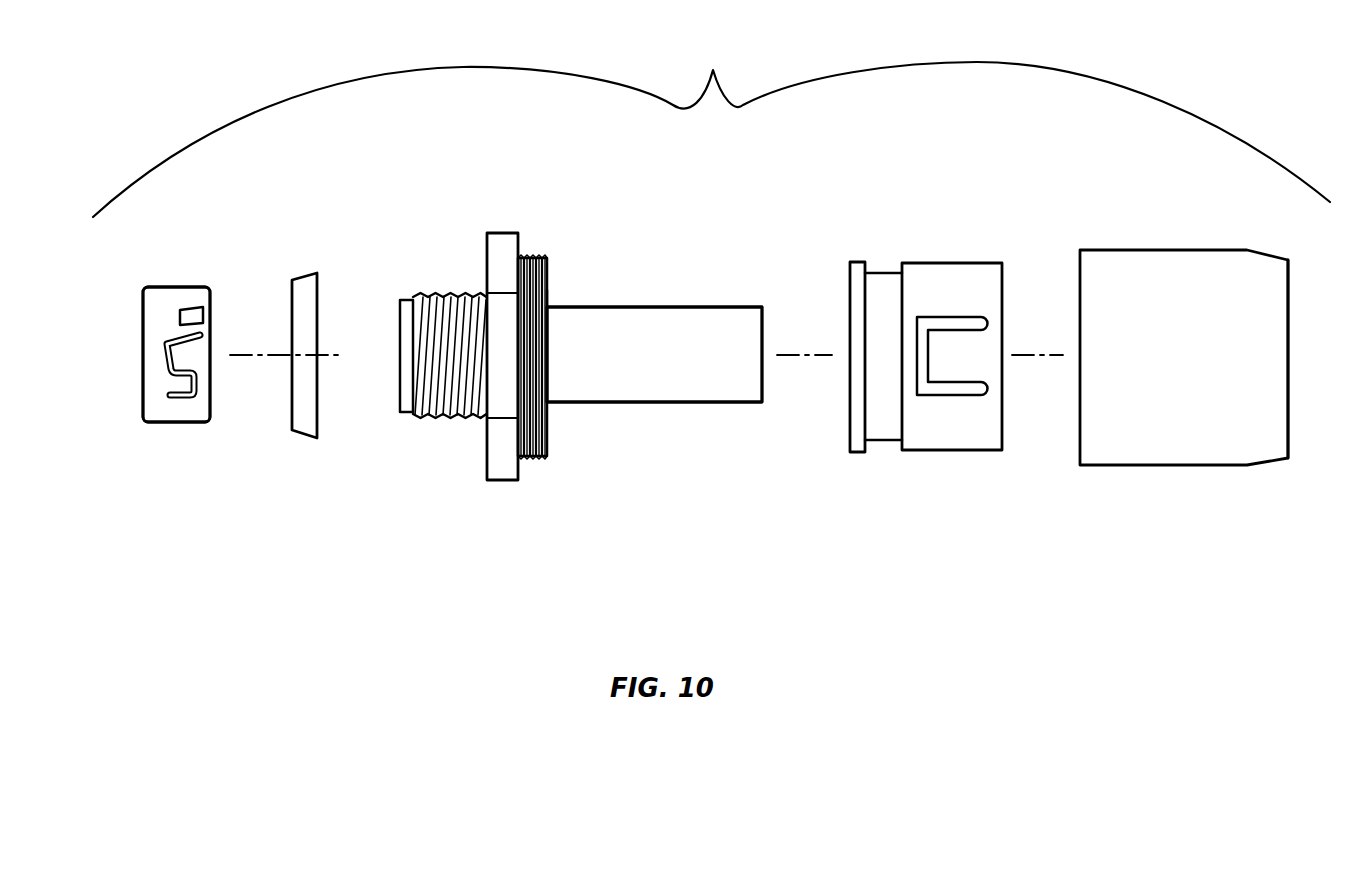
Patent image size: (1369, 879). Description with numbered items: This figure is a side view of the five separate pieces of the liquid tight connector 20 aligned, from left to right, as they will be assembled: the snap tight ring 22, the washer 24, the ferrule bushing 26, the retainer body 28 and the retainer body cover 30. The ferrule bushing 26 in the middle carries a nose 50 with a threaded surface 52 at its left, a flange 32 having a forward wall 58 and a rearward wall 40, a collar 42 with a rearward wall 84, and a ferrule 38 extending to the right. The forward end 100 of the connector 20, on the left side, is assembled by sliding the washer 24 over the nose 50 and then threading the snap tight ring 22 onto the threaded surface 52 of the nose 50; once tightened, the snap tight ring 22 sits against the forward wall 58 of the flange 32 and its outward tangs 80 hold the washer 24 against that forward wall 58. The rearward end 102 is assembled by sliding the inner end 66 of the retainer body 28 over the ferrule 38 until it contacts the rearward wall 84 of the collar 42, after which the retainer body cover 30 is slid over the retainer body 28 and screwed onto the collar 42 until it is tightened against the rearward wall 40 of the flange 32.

The liquid tight connector 20 is at (713, 70).
The snap tight ring 22 is at (183, 434).
The washer 24 is at (313, 454).
The ferrule bushing 26 is at (656, 420).
The retainer body 28 is at (941, 465).
The retainer body cover 30 is at (1212, 485).
The flange 32 is at (497, 240).
The ferrule 38 is at (673, 368).
The rearward wall of the flange 40 is at (520, 245).
The collar 42 is at (538, 257).
The nose 50 is at (446, 300).
The threaded surface 52 is at (447, 420).
The forward wall of the flange 58 is at (487, 470).
The inner end of the retainer body 66 is at (850, 308).
The outward tangs 80 is at (196, 310).
The rearward wall of the collar 84 is at (549, 292).
The forward end 100 is at (142, 328).
The rearward end 102 is at (1289, 292).